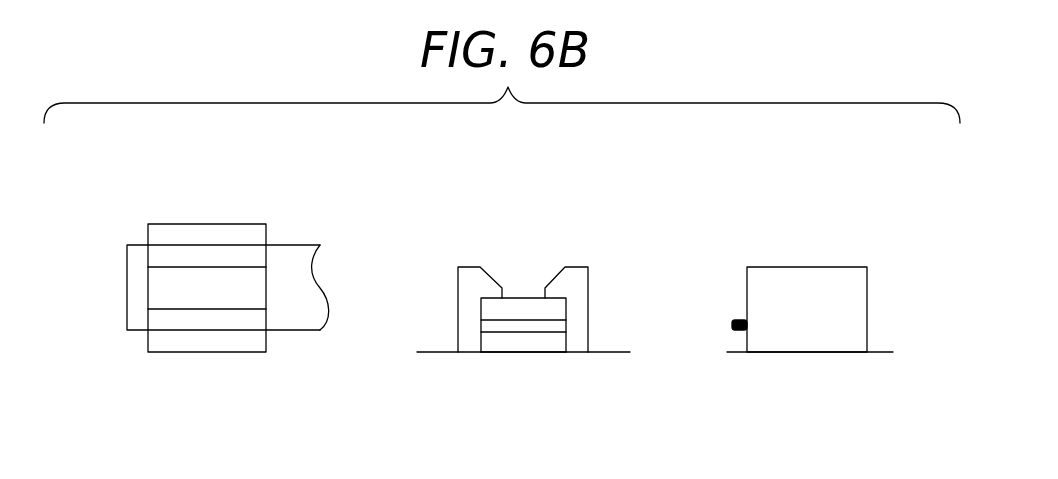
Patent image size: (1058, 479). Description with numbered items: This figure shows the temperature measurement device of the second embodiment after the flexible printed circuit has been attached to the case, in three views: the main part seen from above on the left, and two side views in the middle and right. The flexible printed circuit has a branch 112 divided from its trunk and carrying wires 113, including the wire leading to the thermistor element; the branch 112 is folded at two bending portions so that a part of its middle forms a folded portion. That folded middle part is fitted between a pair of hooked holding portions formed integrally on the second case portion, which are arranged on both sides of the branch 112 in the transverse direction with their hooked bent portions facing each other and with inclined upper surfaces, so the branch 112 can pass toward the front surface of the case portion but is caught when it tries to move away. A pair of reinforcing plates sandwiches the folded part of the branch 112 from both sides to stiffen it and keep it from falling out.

The branch 112 is at (295, 267).
The wires 113 is at (545, 343).